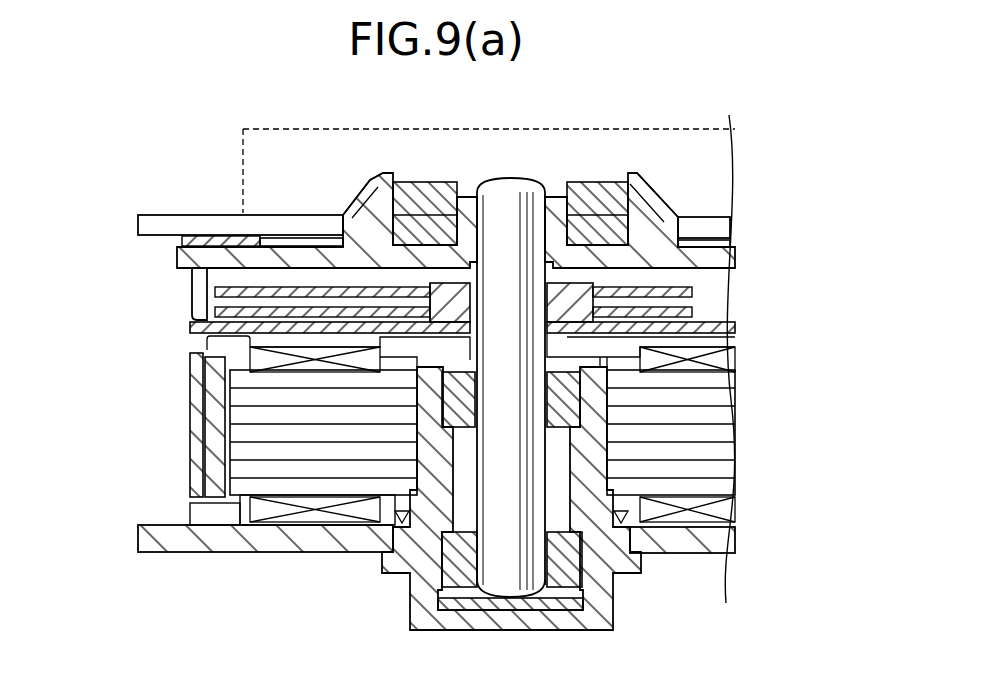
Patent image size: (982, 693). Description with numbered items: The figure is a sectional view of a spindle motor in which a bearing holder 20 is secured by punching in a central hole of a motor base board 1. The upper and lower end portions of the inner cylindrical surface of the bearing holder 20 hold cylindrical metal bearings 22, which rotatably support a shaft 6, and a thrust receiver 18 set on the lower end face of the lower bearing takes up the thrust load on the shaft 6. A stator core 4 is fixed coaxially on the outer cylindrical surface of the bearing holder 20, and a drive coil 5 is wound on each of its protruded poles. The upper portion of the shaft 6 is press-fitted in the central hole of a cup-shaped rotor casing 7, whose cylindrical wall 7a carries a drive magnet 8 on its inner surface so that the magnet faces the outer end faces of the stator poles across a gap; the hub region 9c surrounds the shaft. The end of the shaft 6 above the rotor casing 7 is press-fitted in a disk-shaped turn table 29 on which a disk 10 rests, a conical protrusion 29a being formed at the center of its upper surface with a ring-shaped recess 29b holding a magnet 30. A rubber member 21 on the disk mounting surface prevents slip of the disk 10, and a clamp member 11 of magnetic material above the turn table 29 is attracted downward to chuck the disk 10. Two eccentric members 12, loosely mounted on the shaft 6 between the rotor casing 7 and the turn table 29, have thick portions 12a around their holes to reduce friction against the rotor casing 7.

The motor base board 1 is at (162, 550).
The stator core 4 is at (270, 470).
The drive coil 5 is at (387, 351).
The shaft 6 is at (490, 190).
The rotor casing 7 is at (190, 337).
The rotor yoke cylindrical wall 7a is at (197, 387).
The drive magnet 8 is at (217, 450).
The hub flange 9c is at (198, 290).
The disk 10 is at (275, 218).
The clamp member 11 is at (298, 128).
The eccentric member 12 is at (217, 308).
The thick portion 12a is at (421, 289).
The thrust receiver 18 is at (533, 603).
The bearing holder 20 is at (417, 588).
The rubber member 21 is at (205, 240).
The metal bearing 22 is at (462, 420).
The turn table 29 is at (697, 264).
The conical protrusion 29a is at (363, 203).
The ring-shaped recess 29b is at (422, 166).
The magnet 30 is at (602, 218).